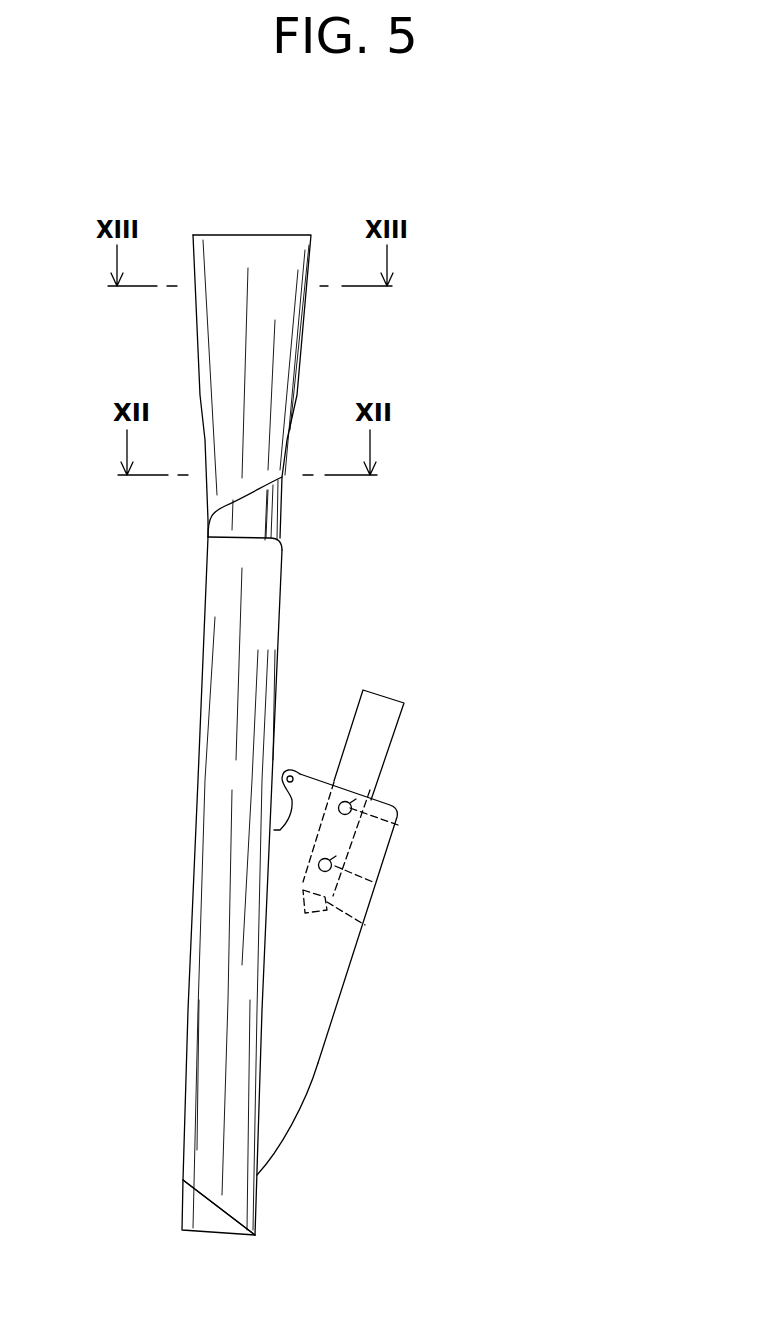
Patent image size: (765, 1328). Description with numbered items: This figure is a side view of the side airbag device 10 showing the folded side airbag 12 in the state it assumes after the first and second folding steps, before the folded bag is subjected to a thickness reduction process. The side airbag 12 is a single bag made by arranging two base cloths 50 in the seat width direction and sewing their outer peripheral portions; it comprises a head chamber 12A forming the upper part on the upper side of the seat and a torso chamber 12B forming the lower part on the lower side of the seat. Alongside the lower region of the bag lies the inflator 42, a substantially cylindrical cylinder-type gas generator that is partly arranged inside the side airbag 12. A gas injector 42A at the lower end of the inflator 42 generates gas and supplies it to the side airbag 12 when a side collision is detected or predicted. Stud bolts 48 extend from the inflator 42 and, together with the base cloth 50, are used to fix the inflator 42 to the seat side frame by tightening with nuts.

The side airbag device 10 is at (561, 494).
The side airbag 12 is at (290, 599).
The head chamber 12A is at (243, 245).
The torso chamber 12B is at (205, 1123).
The inflator 42 is at (391, 684).
The gas injector 42A is at (365, 925).
The stud bolts 48 is at (397, 826).
The base cloth 50 is at (297, 1058).